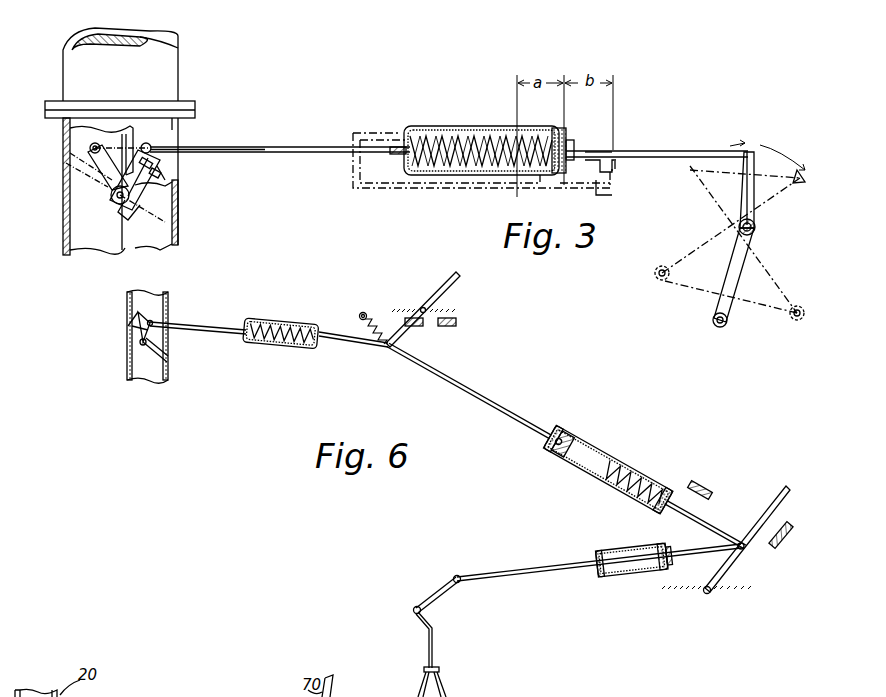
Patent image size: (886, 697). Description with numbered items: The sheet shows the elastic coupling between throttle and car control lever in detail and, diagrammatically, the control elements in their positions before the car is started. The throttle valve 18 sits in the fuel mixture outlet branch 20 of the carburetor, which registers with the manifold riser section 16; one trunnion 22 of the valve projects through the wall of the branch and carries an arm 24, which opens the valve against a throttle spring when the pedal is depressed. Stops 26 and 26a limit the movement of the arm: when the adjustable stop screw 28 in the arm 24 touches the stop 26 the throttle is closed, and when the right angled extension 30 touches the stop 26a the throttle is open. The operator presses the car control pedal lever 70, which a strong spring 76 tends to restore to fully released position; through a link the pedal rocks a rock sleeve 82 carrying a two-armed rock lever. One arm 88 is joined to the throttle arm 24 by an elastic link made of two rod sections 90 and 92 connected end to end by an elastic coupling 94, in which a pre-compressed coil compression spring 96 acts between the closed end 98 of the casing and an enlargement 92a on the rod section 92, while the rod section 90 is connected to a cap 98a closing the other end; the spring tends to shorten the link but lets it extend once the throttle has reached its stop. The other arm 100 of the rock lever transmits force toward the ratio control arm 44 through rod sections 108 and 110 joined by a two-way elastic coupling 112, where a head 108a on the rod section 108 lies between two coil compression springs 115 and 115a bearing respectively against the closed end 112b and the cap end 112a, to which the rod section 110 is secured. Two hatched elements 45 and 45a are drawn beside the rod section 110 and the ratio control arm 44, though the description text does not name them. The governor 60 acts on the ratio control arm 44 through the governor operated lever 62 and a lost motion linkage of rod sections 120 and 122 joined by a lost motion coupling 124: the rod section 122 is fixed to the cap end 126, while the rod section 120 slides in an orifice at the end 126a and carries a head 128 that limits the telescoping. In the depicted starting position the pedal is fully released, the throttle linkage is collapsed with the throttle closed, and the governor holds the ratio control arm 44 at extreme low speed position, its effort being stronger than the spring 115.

In FIG. 3, the manifold riser section 16 is at (168, 80).
In FIG. 3, the throttle valve 18 is at (121, 232).
In FIG. 6, the throttle valve 18 is at (138, 338).
In FIG. 3, the fuel mixture outlet branch 20 is at (168, 138).
In FIG. 6, the fuel mixture outlet branch 20 is at (132, 374).
In FIG. 3, the trunnion 22 is at (110, 196).
In FIG. 3, the arm 24 is at (150, 160).
In FIG. 6, the arm 24 is at (155, 320).
In FIG. 3, the stop 26 is at (80, 148).
In FIG. 3, the stop 26a is at (118, 208).
In FIG. 3, the adjustable stop screw 28 is at (176, 190).
In FIG. 6, the adjustable stop screw 28 is at (160, 336).
In FIG. 3, the right angled extension 30 is at (166, 196).
In FIG. 6, the ratio control arm 44 is at (736, 560).
In FIG. 6, the stop 45 is at (704, 486).
In FIG. 6, the stop 45a is at (783, 526).
In FIG. 6, the governor 60 is at (430, 678).
In FIG. 6, the governor operated lever 62 is at (432, 626).
In FIG. 6, the car control pedal lever 70 is at (446, 293).
In FIG. 6, the spring 76 is at (374, 318).
In FIG. 3, the rock sleeve 82 is at (752, 232).
In FIG. 3, the arm 88 is at (744, 192).
In FIG. 3, the rod section 90 is at (653, 151).
In FIG. 6, the rod section 90 is at (348, 344).
In FIG. 3, the rod section 92 is at (300, 145).
In FIG. 6, the rod section 92 is at (228, 340).
In FIG. 3, the enlargement 92a is at (565, 142).
In FIG. 3, the elastic coupling 94 is at (430, 127).
In FIG. 6, the elastic coupling 94 is at (282, 322).
In FIG. 3, the coil compression spring 96 is at (480, 128).
In FIG. 6, the coil compression spring 96 is at (288, 342).
In FIG. 3, the closed end 98 is at (405, 132).
In FIG. 3, the cap 98a is at (606, 186).
In FIG. 3, the arm 100 is at (724, 298).
In FIG. 6, the rod section 108 is at (450, 392).
In FIG. 6, the head 108a is at (560, 450).
In FIG. 6, the rod section 110 is at (718, 532).
In FIG. 6, the two-way elastic coupling 112 is at (594, 442).
In FIG. 6, the cap end 112a is at (660, 480).
In FIG. 6, the closed end 112b is at (546, 424).
In FIG. 6, the coil compression spring 115 is at (560, 428).
In FIG. 6, the coil compression spring 115a is at (608, 484).
In FIG. 6, the rod section 120 is at (540, 570).
In FIG. 6, the rod section 122 is at (698, 572).
In FIG. 6, the lost motion coupling 124 is at (620, 576).
In FIG. 6, the cap end 126 is at (668, 550).
In FIG. 6, the end 126a is at (598, 568).
In FIG. 6, the head 128 is at (664, 566).